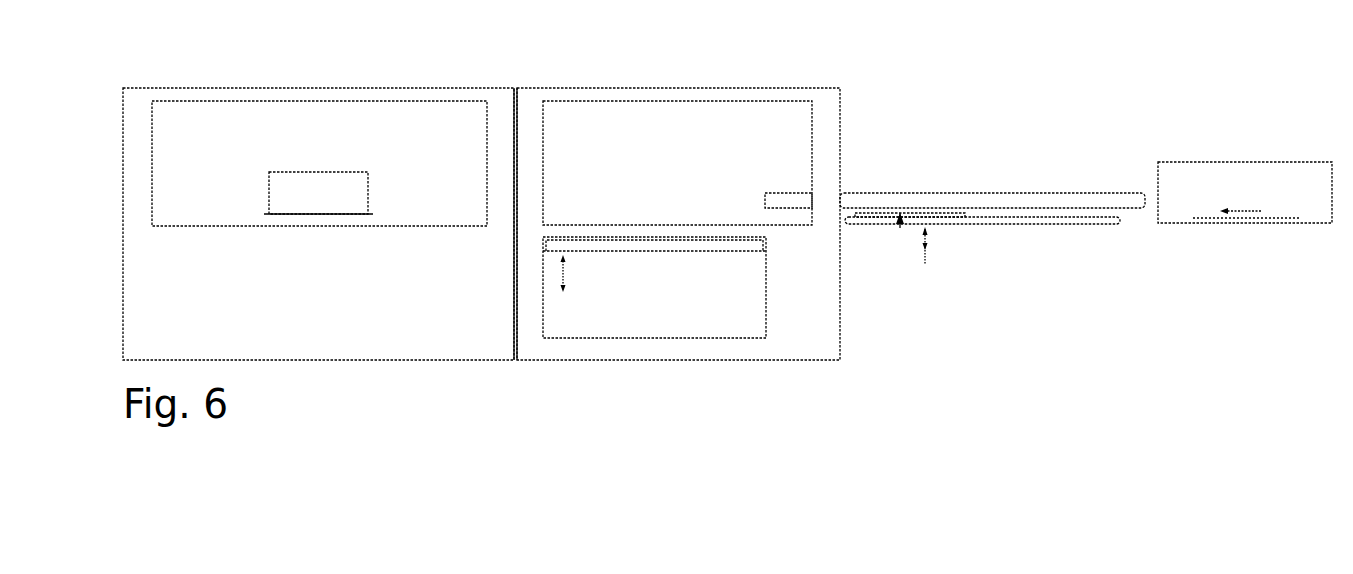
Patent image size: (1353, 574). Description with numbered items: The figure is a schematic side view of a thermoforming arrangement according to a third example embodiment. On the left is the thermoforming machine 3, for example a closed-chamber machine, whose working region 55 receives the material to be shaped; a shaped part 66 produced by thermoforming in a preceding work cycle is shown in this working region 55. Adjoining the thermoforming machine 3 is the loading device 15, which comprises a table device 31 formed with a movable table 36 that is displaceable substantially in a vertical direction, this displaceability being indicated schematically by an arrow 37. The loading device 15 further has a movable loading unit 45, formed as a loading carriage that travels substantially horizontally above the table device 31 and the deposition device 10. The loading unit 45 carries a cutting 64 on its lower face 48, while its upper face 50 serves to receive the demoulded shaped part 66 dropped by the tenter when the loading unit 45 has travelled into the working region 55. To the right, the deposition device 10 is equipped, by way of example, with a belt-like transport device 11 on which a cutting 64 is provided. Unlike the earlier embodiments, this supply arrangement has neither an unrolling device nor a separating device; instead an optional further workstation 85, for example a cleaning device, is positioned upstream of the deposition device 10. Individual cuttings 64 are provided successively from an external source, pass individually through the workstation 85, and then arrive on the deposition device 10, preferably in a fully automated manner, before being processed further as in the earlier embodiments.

The thermoforming machine 3 is at (323, 80).
The loading device 15 is at (738, 82).
The working region 55 is at (453, 180).
The shaped part 66 is at (355, 181).
The table device 31 is at (680, 267).
The movable table 36 is at (697, 247).
The arrow 37 is at (563, 278).
The upper face of the loading unit 50 is at (917, 190).
The movable loading unit 45 is at (983, 205).
The belt-like transport device 11 is at (1105, 226).
The cutting 64 is at (955, 216).
The lower face of the loading unit 48 is at (900, 228).
The deposition device 10 is at (925, 267).
The workstation 85 is at (1287, 180).